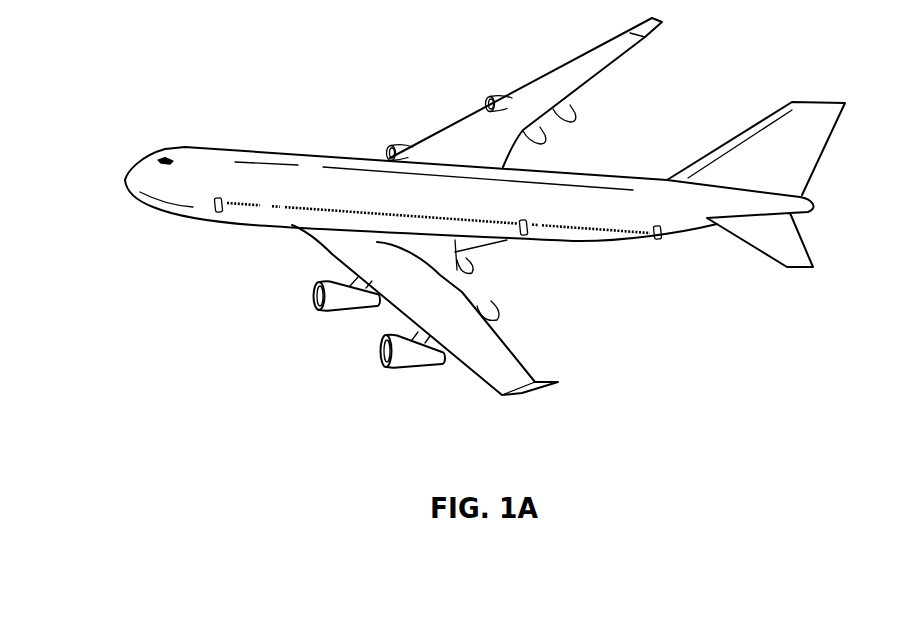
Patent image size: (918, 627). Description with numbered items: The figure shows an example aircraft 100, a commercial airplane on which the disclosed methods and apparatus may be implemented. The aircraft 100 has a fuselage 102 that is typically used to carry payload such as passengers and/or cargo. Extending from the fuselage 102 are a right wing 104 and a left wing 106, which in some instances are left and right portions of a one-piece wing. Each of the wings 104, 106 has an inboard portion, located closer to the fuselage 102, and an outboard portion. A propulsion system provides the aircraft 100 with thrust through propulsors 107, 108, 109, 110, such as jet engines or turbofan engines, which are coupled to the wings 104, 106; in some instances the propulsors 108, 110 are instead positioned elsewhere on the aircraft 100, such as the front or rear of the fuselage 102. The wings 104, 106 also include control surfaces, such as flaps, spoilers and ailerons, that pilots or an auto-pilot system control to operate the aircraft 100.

The aircraft 100 is at (446, 226).
The fuselage 102 is at (227, 145).
The right wing 104 is at (567, 73).
The left wing 106 is at (462, 291).
The propulsor 107 is at (488, 98).
The propulsor 108 is at (389, 150).
The propulsor 109 is at (408, 367).
The propulsor 110 is at (340, 310).